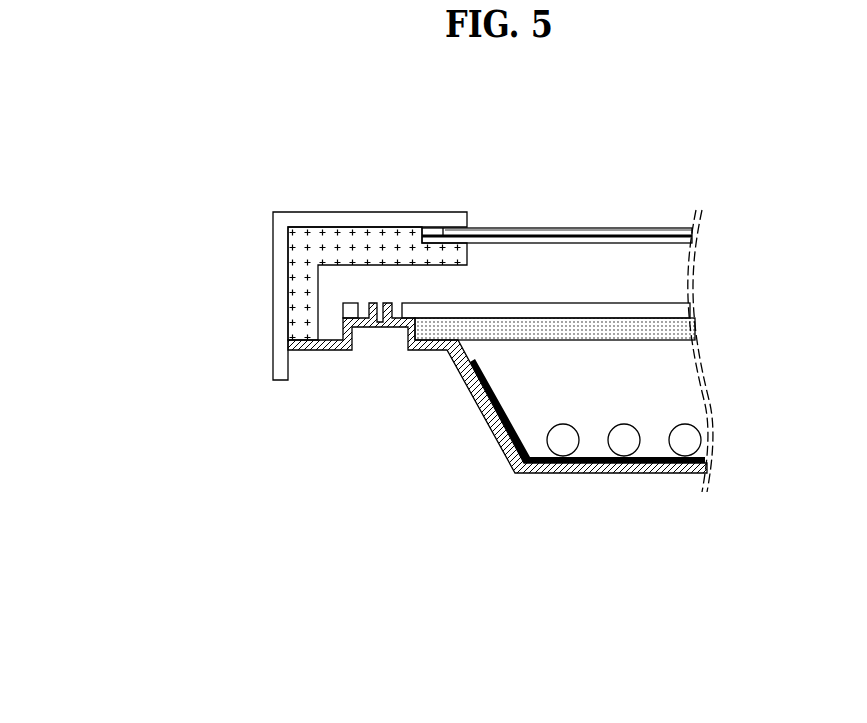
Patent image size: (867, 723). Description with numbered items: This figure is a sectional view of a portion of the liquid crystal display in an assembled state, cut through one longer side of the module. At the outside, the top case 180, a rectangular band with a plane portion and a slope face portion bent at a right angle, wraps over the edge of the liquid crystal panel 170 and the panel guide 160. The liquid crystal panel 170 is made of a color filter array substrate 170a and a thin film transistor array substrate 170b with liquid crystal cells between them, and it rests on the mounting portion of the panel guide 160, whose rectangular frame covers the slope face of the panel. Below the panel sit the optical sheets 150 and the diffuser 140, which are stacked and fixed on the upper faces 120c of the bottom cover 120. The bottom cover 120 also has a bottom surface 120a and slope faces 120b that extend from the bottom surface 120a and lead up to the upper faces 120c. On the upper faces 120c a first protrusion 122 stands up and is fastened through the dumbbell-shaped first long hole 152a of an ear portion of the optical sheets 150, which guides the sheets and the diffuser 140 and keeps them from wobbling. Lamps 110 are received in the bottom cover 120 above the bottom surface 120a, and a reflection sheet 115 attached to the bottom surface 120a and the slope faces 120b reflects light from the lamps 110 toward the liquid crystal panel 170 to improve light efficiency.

The lamps 110 is at (692, 438).
The reflection sheet 115 is at (653, 474).
The bottom cover 120 is at (497, 351).
The bottom surface 120a is at (542, 474).
The slope faces 120b is at (493, 428).
The upper faces 120c is at (320, 351).
The first protrusions 122 is at (389, 301).
The first long hole 152a is at (365, 288).
The diffuser 140 is at (685, 333).
The optical sheets 150 is at (680, 310).
The panel guide 160 is at (297, 246).
The liquid crystal panel 170 is at (557, 188).
The color filter array substrate 170a is at (550, 235).
The thin film transistor array substrate 170b is at (543, 161).
The top case 180 is at (299, 218).